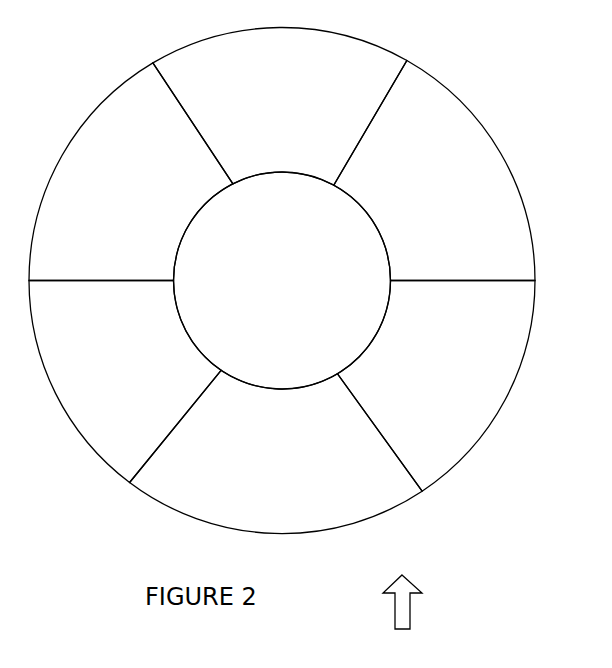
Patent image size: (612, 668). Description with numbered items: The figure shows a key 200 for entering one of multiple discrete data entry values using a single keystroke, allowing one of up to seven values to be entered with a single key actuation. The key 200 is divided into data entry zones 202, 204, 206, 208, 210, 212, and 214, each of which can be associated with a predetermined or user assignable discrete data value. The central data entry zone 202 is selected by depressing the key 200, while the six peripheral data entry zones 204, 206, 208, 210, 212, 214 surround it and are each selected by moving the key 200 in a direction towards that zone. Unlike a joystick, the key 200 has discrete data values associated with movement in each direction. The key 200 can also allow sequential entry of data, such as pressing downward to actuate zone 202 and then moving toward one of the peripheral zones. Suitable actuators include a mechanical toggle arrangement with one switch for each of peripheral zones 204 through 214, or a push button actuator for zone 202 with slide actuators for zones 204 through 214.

The key 200 is at (376, 602).
The data entry zone 202 is at (282, 280).
The data entry zone 204 is at (131, 172).
The data entry zone 206 is at (280, 107).
The data entry zone 208 is at (434, 171).
The data entry zone 210 is at (125, 382).
The data entry zone 212 is at (276, 451).
The data entry zone 214 is at (437, 386).